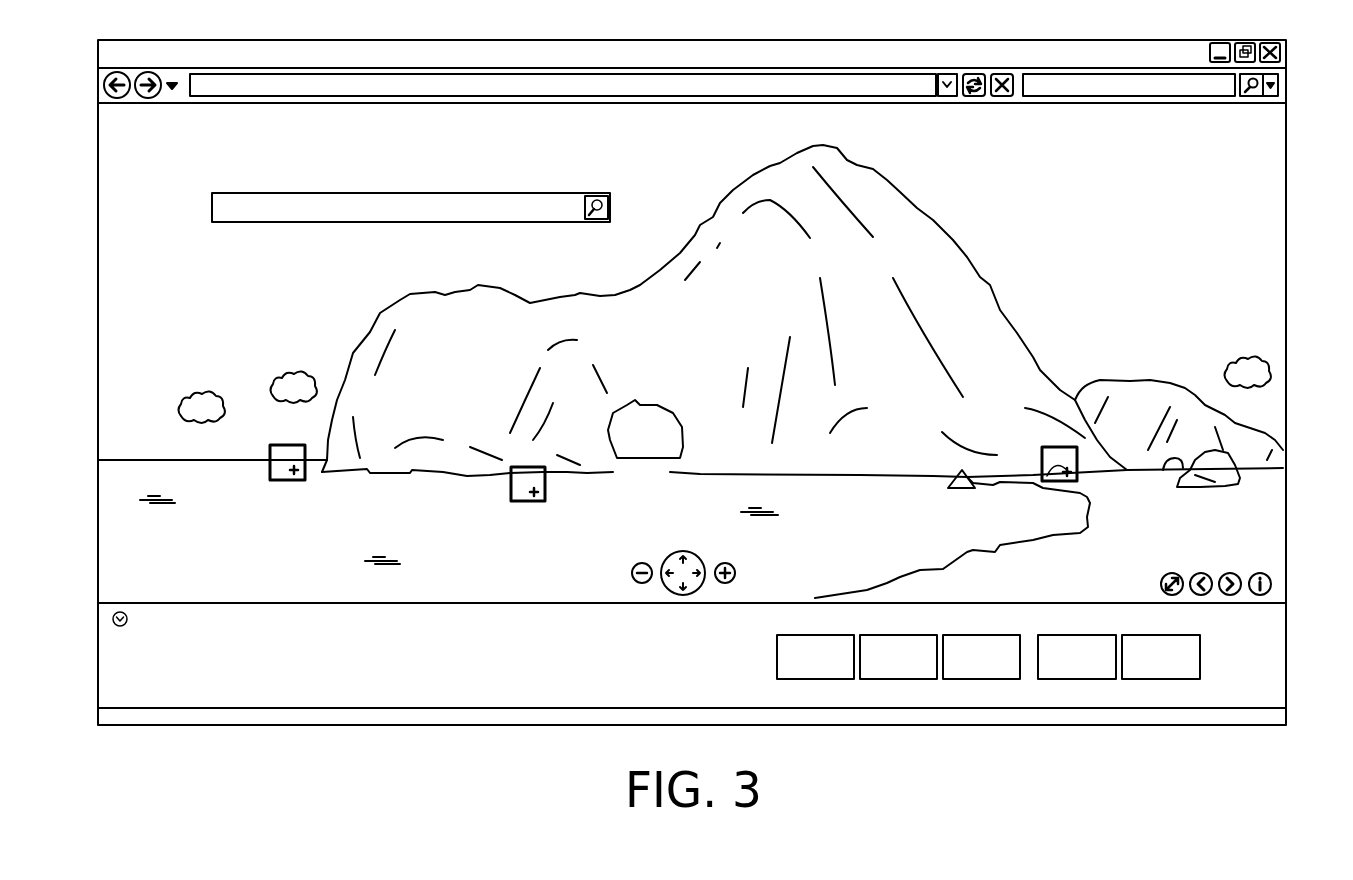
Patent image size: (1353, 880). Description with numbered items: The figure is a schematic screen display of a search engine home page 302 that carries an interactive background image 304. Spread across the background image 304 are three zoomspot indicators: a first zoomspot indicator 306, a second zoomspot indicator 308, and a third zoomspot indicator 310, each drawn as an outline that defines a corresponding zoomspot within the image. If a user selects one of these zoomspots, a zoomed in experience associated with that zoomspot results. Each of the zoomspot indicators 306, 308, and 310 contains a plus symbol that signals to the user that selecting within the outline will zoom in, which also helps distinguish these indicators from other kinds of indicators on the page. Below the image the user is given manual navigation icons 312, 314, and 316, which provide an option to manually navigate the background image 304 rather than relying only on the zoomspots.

The search engine home page 302 is at (82, 104).
The interactive background image 304 is at (1277, 256).
The first zoomspot indicator 306 is at (290, 445).
The second zoomspot indicator 308 is at (523, 503).
The third zoomspot indicator 310 is at (1050, 447).
The manual navigation icon 312 is at (636, 564).
The manual navigation icon 314 is at (683, 551).
The manual navigation icon 316 is at (731, 564).